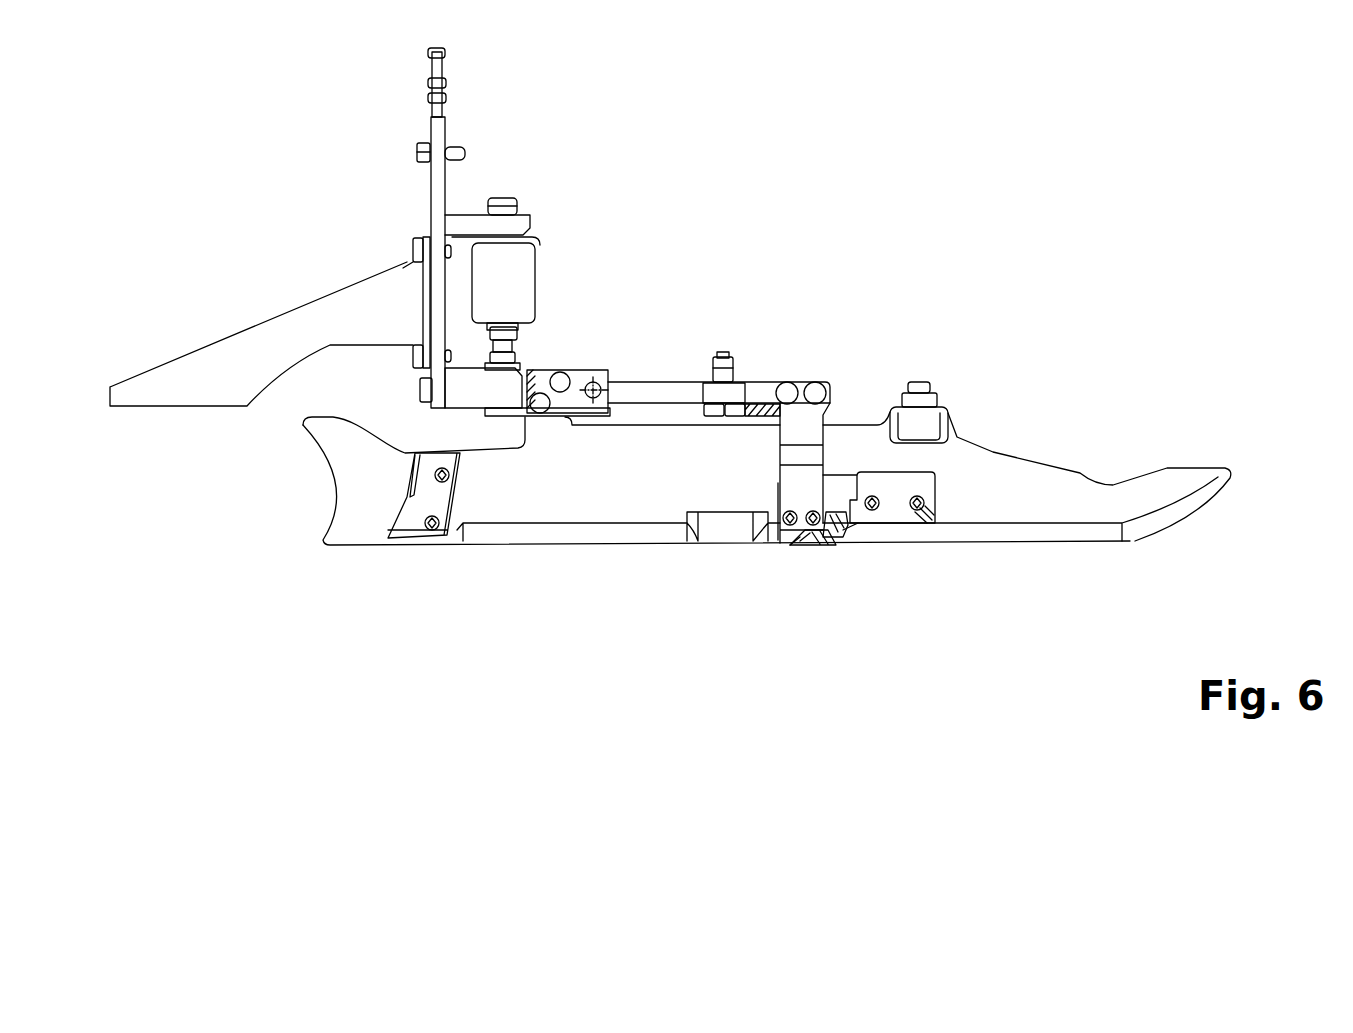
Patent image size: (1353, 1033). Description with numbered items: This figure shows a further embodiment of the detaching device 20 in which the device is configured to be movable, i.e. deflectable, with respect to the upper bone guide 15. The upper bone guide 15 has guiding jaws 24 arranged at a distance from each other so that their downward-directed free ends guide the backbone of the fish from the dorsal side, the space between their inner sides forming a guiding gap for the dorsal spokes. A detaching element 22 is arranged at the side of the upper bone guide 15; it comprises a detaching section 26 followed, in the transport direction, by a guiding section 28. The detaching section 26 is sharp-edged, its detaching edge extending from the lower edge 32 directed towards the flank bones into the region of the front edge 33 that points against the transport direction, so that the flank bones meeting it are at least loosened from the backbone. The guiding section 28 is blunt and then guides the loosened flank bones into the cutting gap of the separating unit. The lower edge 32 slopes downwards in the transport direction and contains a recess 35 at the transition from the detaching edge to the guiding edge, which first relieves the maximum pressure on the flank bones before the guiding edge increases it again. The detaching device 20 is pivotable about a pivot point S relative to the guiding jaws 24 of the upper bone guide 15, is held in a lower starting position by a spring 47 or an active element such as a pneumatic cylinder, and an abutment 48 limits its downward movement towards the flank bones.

The upper bone guide 15 is at (1037, 437).
The detaching device 20 is at (837, 477).
The detaching element 22 is at (834, 511).
The guiding jaw 24 is at (620, 500).
The detaching section 26 is at (838, 538).
The guiding section 28 is at (818, 546).
The lower edge 32 is at (829, 546).
The front edge 33 is at (845, 532).
The recess 35 is at (802, 545).
The spring 47 is at (753, 382).
The abutment 48 is at (703, 382).
The pivot point S is at (597, 385).